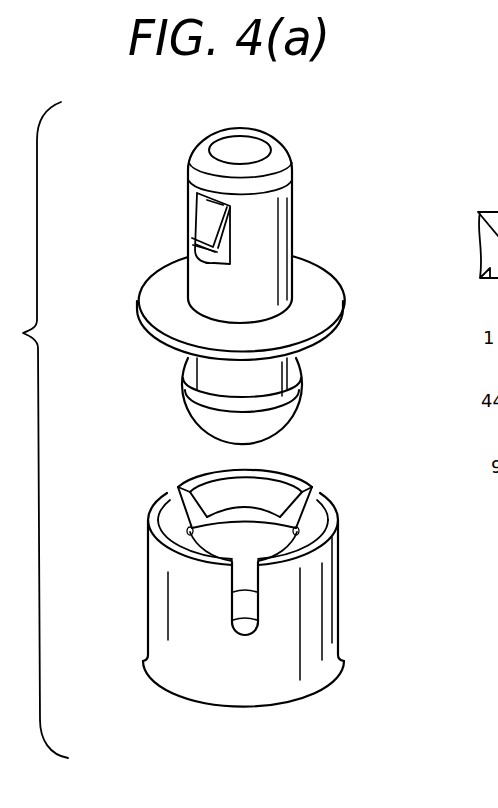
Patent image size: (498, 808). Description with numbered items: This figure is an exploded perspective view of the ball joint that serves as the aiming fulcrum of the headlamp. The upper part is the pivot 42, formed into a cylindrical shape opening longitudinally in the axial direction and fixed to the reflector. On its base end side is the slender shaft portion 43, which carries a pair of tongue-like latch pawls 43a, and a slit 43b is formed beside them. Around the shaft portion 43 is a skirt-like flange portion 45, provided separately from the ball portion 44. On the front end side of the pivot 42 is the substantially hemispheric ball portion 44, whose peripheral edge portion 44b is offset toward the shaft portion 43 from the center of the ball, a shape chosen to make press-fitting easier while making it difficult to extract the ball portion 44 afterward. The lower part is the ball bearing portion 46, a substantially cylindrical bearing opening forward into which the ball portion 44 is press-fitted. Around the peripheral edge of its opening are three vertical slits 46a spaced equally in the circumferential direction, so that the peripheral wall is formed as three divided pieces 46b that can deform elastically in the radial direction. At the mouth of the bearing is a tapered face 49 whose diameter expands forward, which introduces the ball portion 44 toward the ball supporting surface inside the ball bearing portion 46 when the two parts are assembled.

The pivot 42 is at (338, 270).
The shaft portion 43 is at (270, 226).
The latch pawl 43a is at (197, 234).
The slit 43b is at (197, 199).
The ball portion 44 is at (275, 419).
The peripheral edge portion 44b is at (187, 397).
The flange portion 45 is at (155, 300).
The ball bearing portion 46 is at (341, 533).
The vertical slit 46a is at (177, 489).
The divided piece 46b is at (195, 474).
The tapered face 49 is at (270, 478).